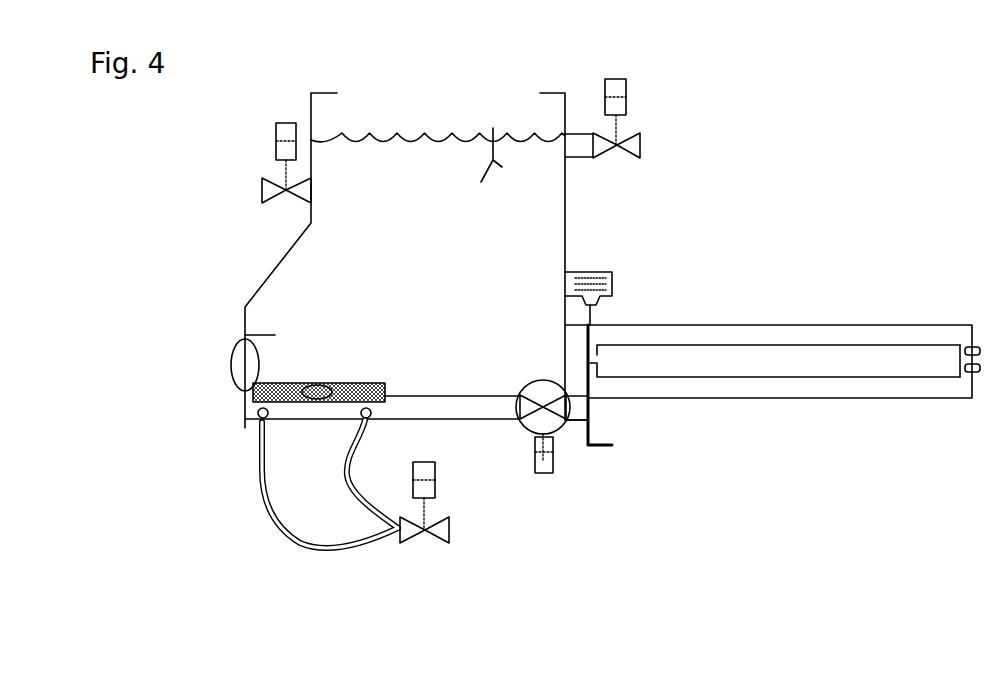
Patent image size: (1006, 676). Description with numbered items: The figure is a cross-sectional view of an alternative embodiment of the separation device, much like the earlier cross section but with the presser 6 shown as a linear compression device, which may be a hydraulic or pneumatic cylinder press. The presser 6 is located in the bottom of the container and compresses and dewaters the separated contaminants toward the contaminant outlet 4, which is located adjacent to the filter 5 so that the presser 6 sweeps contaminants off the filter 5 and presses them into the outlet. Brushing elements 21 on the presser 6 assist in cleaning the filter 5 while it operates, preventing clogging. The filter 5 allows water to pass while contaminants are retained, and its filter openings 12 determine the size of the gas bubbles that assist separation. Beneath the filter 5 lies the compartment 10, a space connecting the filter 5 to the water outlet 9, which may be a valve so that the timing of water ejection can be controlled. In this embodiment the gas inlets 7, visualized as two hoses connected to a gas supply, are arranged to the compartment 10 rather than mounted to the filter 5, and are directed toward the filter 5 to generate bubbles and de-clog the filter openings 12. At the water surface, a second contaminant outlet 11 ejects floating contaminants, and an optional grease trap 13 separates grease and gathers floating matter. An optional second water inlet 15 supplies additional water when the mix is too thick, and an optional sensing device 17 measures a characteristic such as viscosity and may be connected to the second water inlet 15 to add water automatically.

The contaminant outlet 4 is at (230, 370).
The filter 5 is at (247, 425).
The presser 6 is at (647, 360).
The gas inlets 7 is at (268, 422).
The water outlet 9 is at (553, 432).
The compartment 10 is at (482, 420).
The second contaminant outlet 11 is at (640, 145).
The filter openings 12 is at (323, 386).
The grease trap 13 is at (478, 188).
The second water inlet 15 is at (260, 190).
The sensing device 17 is at (587, 271).
The brushing elements 21 is at (238, 335).